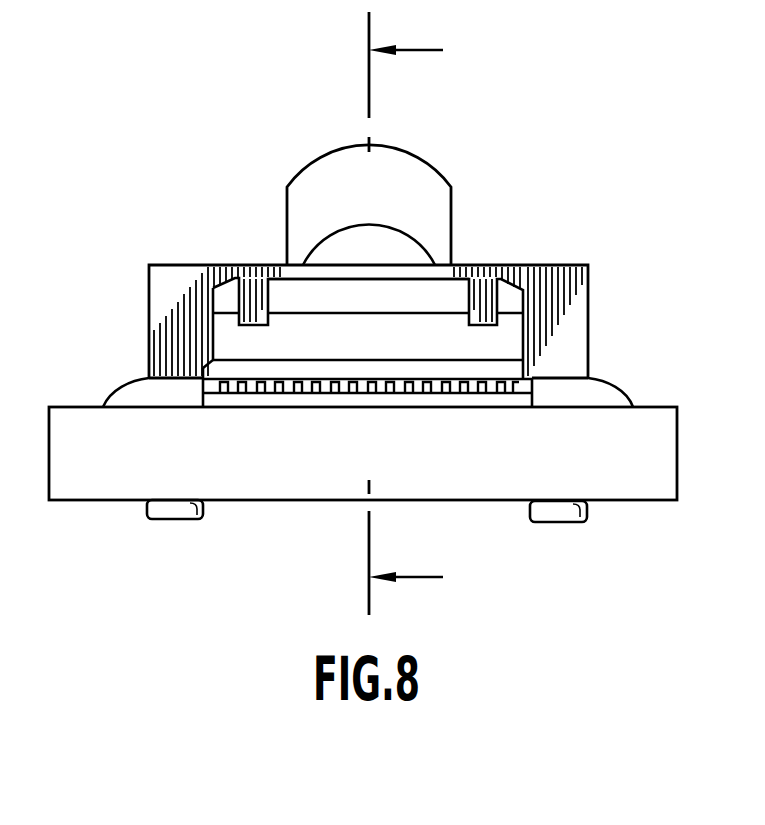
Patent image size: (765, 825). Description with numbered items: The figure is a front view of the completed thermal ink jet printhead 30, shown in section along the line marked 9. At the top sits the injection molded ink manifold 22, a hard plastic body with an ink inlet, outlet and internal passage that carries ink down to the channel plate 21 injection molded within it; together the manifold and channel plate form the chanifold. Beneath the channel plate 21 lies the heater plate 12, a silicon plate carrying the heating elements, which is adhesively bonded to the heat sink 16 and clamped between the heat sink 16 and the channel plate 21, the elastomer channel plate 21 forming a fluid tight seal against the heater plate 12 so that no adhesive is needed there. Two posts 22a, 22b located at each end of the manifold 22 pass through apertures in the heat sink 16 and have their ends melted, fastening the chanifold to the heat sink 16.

The section line 9- 9 is at (406, 314).
The thermal ink jet printhead 30 is at (467, 149).
The ink manifold 22 is at (167, 268).
The channel plate 21 is at (523, 379).
The heater plate 12 is at (515, 402).
The heat sink 16 is at (320, 464).
The post 22a is at (178, 515).
The post 22b is at (558, 523).